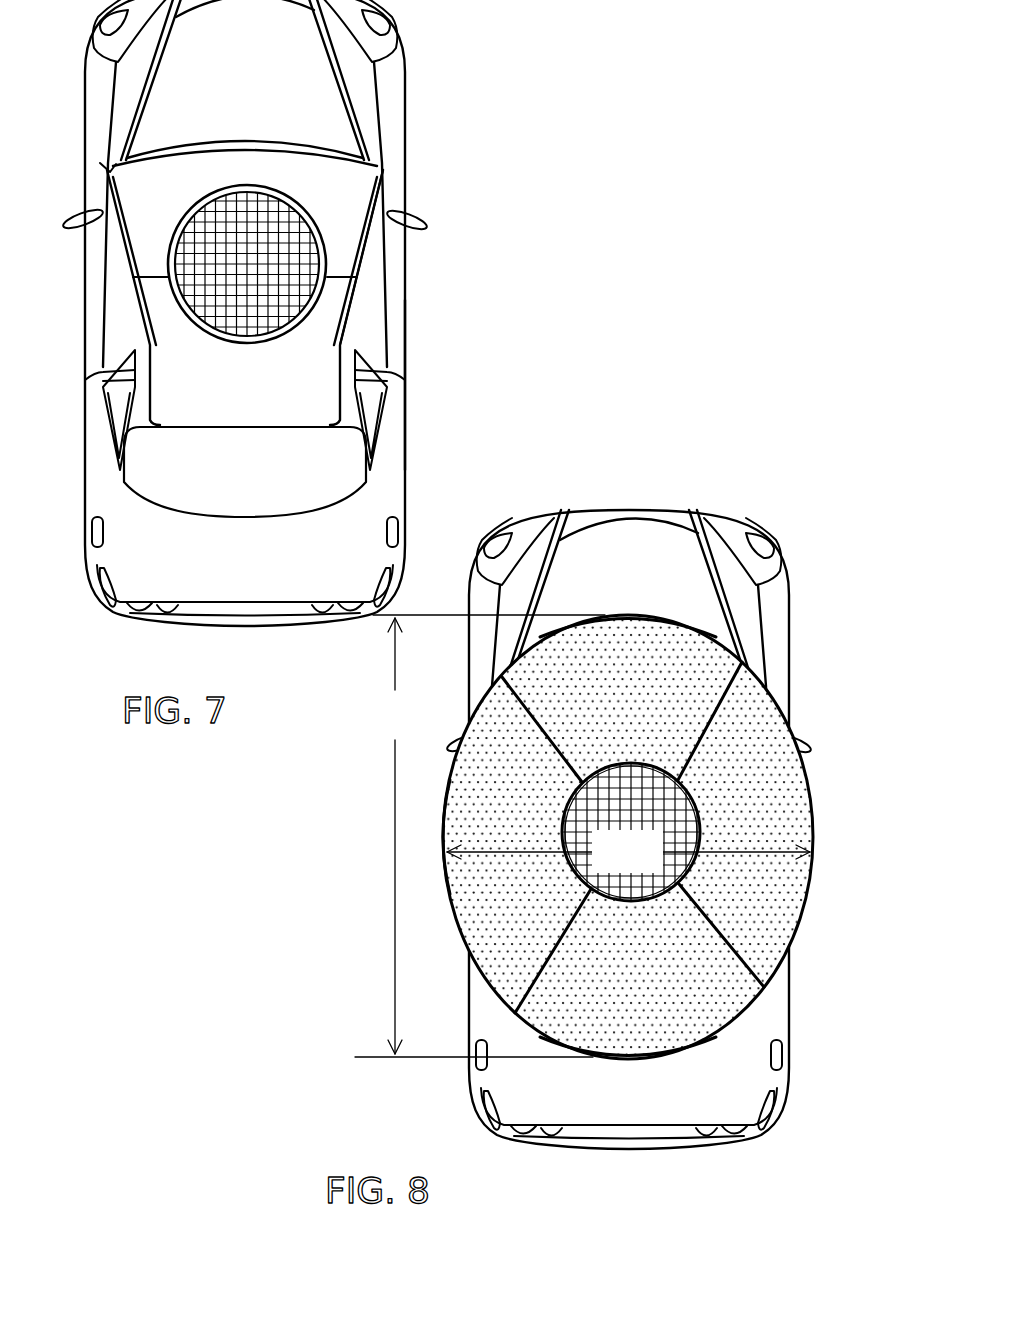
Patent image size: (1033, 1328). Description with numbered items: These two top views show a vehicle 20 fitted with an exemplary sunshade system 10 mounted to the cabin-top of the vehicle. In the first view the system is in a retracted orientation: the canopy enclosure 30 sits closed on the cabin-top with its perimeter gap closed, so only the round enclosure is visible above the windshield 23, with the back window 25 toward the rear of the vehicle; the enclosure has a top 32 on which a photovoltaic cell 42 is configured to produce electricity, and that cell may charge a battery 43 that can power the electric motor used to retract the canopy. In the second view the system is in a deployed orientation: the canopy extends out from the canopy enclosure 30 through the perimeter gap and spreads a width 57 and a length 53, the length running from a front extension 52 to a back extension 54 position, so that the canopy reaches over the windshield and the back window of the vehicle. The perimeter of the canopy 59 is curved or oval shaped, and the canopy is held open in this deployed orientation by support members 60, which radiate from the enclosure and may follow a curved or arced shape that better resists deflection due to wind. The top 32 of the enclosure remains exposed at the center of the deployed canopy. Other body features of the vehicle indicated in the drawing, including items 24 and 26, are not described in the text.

In FIG. 7, the sunshade system 10 is at (315, 192).
In FIG. 8, the sunshade system 10 is at (787, 722).
In FIG. 7, the vehicle 20 is at (387, 90).
In FIG. 8, the vehicle 20 is at (652, 542).
In FIG. 7, the windshield 23 is at (100, 167).
In FIG. 7, the rear door 24 is at (402, 367).
In FIG. 7, the back window 25 is at (325, 483).
In FIG. 7, the front door 26 is at (380, 325).
In FIG. 7, the canopy enclosure 30 is at (300, 255).
In FIG. 8, the canopy enclosure 30 is at (683, 786).
In FIG. 7, the top 32 is at (297, 204).
In FIG. 8, the top 32 is at (670, 803).
In FIG. 7, the photovoltaic cell 42 is at (327, 233).
In FIG. 8, the photovoltaic cell 42 is at (707, 818).
In FIG. 7, the battery 43 is at (168, 233).
In FIG. 8, the front extension 52 is at (618, 616).
In FIG. 8, the length 53 is at (480, 836).
In FIG. 8, the back extension 54 is at (645, 1060).
In FIG. 8, the width 57 is at (628, 851).
In FIG. 8, the perimeter of the canopy 59 is at (458, 922).
In FIG. 8, the support members 60 is at (723, 928).